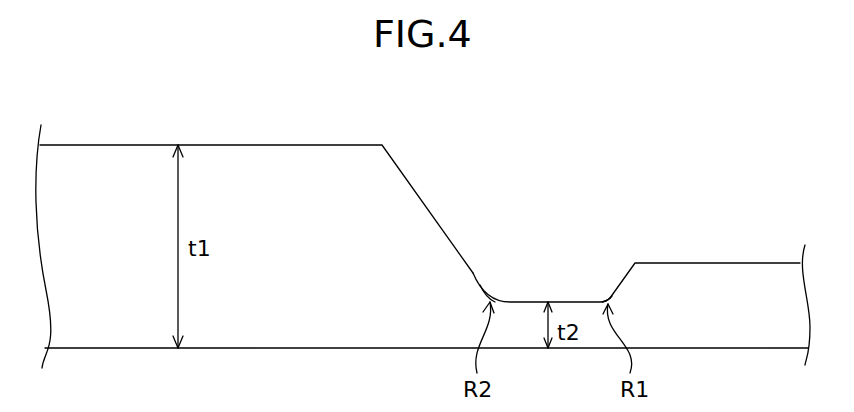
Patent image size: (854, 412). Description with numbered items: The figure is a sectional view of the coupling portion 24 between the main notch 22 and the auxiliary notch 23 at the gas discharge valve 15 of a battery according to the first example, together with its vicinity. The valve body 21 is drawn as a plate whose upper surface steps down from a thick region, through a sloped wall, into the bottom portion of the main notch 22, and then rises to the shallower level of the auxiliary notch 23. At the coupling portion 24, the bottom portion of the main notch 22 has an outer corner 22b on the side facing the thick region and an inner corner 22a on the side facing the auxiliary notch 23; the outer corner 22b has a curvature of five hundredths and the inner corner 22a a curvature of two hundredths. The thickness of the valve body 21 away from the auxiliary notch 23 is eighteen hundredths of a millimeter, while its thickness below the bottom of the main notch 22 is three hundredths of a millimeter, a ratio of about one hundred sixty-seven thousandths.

The gas discharge valve 15 is at (613, 145).
The valve body 21 is at (292, 143).
The main notch 22 is at (550, 240).
The coupling portion 24 is at (541, 215).
The inner corner 22a is at (608, 293).
The outer corner 22b is at (492, 292).
The auxiliary notch 23 is at (705, 257).